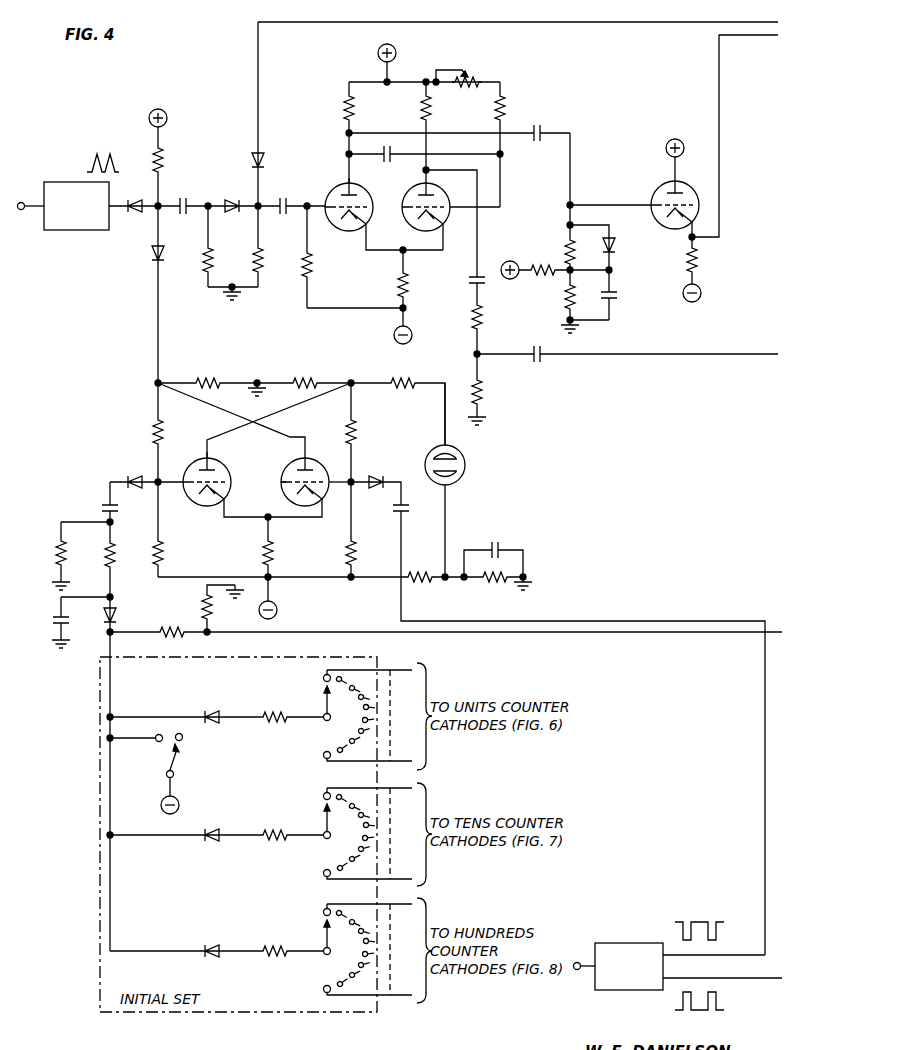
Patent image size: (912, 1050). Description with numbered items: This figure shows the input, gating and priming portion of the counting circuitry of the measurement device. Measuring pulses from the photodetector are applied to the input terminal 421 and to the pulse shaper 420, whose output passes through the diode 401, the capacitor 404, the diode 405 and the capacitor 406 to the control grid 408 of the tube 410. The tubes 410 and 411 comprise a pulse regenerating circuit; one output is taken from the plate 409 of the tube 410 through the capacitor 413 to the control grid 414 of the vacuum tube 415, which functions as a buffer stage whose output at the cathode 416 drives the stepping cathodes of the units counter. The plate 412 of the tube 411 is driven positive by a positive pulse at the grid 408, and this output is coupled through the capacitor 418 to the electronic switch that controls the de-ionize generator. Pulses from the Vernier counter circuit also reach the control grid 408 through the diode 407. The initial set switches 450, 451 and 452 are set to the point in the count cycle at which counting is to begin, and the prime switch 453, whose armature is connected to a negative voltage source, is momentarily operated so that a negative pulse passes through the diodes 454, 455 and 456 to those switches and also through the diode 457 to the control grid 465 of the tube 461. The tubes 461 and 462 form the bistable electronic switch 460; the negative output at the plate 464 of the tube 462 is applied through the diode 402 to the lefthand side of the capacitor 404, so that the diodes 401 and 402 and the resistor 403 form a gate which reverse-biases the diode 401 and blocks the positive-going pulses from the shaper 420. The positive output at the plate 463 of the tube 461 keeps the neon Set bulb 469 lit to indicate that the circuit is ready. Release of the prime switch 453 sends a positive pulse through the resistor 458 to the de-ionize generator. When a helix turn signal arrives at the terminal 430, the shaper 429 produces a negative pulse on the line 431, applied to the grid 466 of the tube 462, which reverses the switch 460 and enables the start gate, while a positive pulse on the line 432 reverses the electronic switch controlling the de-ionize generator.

The diode 401 is at (141, 211).
The diode 402 is at (150, 258).
The resistor 403 is at (164, 158).
The capacitor 404 is at (186, 198).
The diode 405 is at (231, 199).
The capacitor 406 is at (279, 199).
The diode 407 is at (254, 154).
The control grid 408 is at (328, 204).
The plate 409 is at (353, 188).
The tube 410 is at (366, 222).
The tube 411 is at (444, 222).
The plate 412 is at (436, 188).
The capacitor 413 is at (543, 129).
The control grid 414 is at (652, 198).
The vacuum tube 415 is at (678, 183).
The cathode 416 is at (689, 229).
The capacitor 418 is at (546, 357).
The pulse shaper 420 is at (72, 232).
The input terminal 421 is at (20, 211).
The shaper 429 is at (623, 943).
The terminal 430 is at (577, 971).
The line 431 is at (695, 957).
The line 432 is at (741, 980).
The initial set switch 450 is at (323, 744).
The initial set switch 451 is at (323, 862).
The initial set switch 452 is at (323, 978).
The prime switch 453 is at (156, 766).
The diode 454 is at (217, 710).
The diode 455 is at (217, 828).
The diode 456 is at (233, 932).
The diode 457 is at (119, 613).
The resistor 458 is at (178, 638).
The bistable electronic switch 460 is at (268, 449).
The tube 461 is at (198, 459).
The tube 462 is at (281, 494).
The plate 463 is at (217, 468).
The plate 464 is at (309, 450).
The control grid 465 is at (193, 498).
The grid 466 is at (336, 492).
The neon Set bulb 469 is at (466, 472).